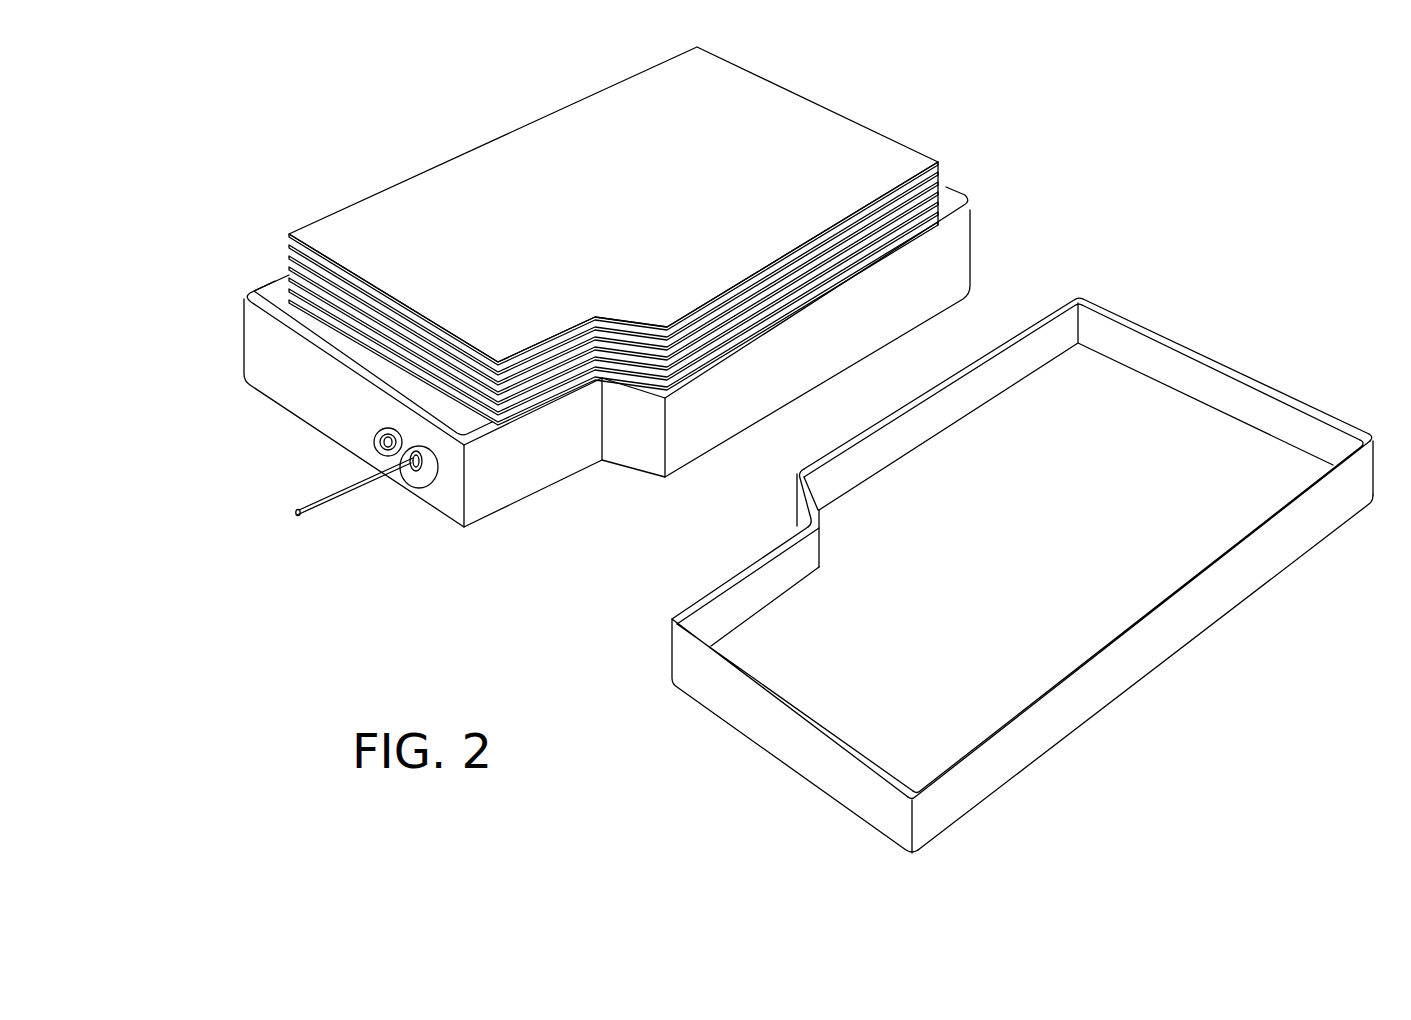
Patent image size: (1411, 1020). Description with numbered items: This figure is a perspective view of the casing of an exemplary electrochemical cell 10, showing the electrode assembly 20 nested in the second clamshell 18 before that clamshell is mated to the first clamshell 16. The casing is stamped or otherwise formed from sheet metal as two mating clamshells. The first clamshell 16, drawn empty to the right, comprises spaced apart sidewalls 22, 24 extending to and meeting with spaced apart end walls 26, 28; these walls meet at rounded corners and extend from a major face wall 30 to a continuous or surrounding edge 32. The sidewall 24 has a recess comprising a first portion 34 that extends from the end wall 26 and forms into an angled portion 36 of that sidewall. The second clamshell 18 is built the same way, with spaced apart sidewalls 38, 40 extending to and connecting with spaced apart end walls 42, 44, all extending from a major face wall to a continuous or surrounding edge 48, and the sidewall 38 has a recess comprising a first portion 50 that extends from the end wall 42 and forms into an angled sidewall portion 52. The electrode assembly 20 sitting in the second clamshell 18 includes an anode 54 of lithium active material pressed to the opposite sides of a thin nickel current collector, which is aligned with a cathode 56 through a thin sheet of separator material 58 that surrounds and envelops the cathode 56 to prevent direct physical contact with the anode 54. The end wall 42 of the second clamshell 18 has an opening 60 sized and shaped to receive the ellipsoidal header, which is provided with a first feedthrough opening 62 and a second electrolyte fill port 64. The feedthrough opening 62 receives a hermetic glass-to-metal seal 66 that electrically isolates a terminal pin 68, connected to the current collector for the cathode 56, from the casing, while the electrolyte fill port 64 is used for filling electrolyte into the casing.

The electrochemical cell 10 is at (1186, 158).
The first clamshell 16 is at (1271, 624).
The second clamshell 18 is at (1024, 250).
The electrode assembly 20 is at (360, 146).
The sidewall 22 is at (1025, 752).
The sidewall 24 is at (878, 450).
The end wall 26 is at (773, 738).
The end wall 28 is at (1230, 360).
The major face wall 30 is at (1067, 510).
The surrounding edge 32 is at (1318, 415).
The first portion 34 is at (765, 592).
The angled portion 36 is at (797, 517).
The sidewall 38 is at (688, 432).
The sidewall 40 is at (273, 301).
The end wall 42 is at (262, 357).
The end wall 44 is at (970, 201).
The surrounding edge 48 is at (942, 182).
The first portion 50 is at (503, 482).
The angled sidewall portion 52 is at (636, 450).
The anode 54 is at (289, 278).
The cathode 56 is at (289, 236).
The separator material 58 is at (289, 256).
The opening 60 is at (427, 490).
The feedthrough opening 62 is at (373, 477).
The electrolyte fill port 64 is at (378, 435).
The glass-to-metal seal 66 is at (376, 441).
The terminal pin 68 is at (310, 518).